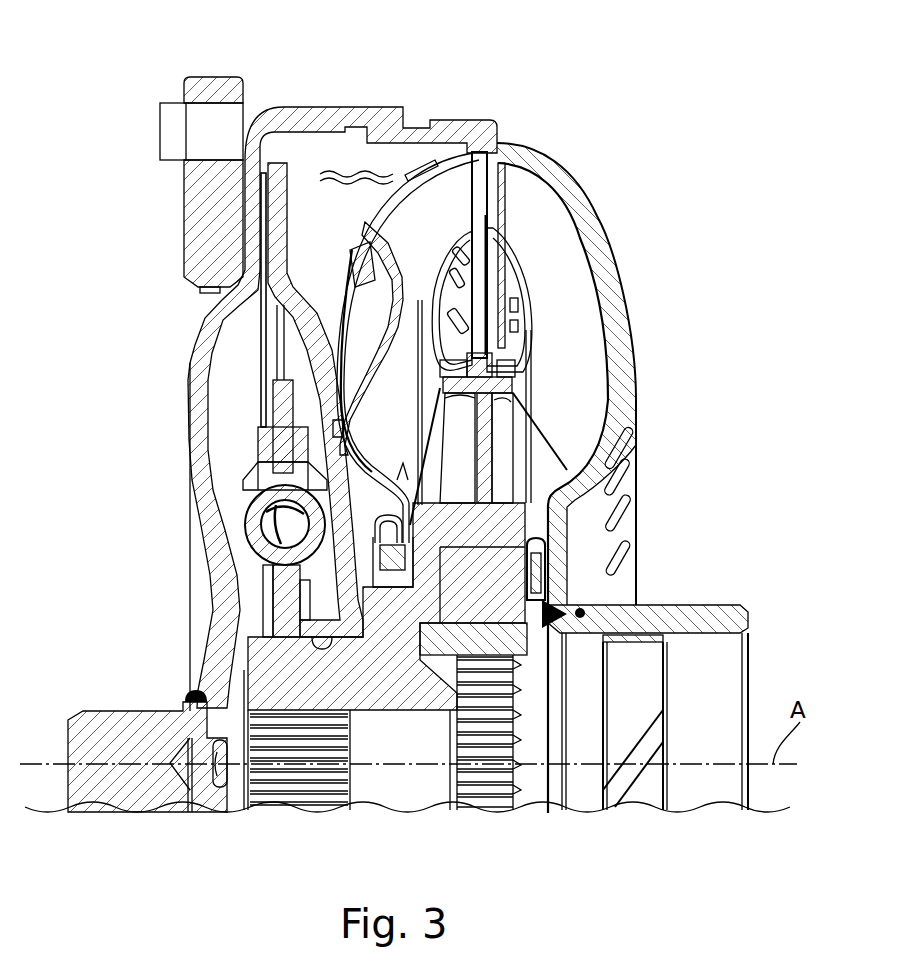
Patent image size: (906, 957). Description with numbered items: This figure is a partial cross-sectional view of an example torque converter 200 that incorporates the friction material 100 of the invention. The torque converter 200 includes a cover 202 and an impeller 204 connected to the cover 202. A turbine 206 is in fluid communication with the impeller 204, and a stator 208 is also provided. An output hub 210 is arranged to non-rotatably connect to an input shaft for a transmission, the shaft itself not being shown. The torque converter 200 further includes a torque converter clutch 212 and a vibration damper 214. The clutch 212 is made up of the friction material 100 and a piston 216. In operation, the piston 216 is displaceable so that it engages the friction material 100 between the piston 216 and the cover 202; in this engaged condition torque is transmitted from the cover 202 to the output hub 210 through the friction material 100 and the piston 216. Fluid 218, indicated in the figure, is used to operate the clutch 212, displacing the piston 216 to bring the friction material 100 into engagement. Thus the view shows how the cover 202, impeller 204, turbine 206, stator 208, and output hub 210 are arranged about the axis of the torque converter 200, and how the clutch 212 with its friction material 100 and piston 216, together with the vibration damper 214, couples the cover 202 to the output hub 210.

The friction material 100 is at (263, 173).
The torque converter 200 is at (660, 175).
The cover 202 is at (313, 107).
The impeller 204 is at (570, 322).
The turbine 206 is at (452, 192).
The stator 208 is at (483, 423).
The output hub 210 is at (377, 695).
The torque converter clutch 212 is at (298, 168).
The vibration damper 214 is at (240, 436).
The piston 216 is at (288, 230).
The fluid 218 is at (367, 172).